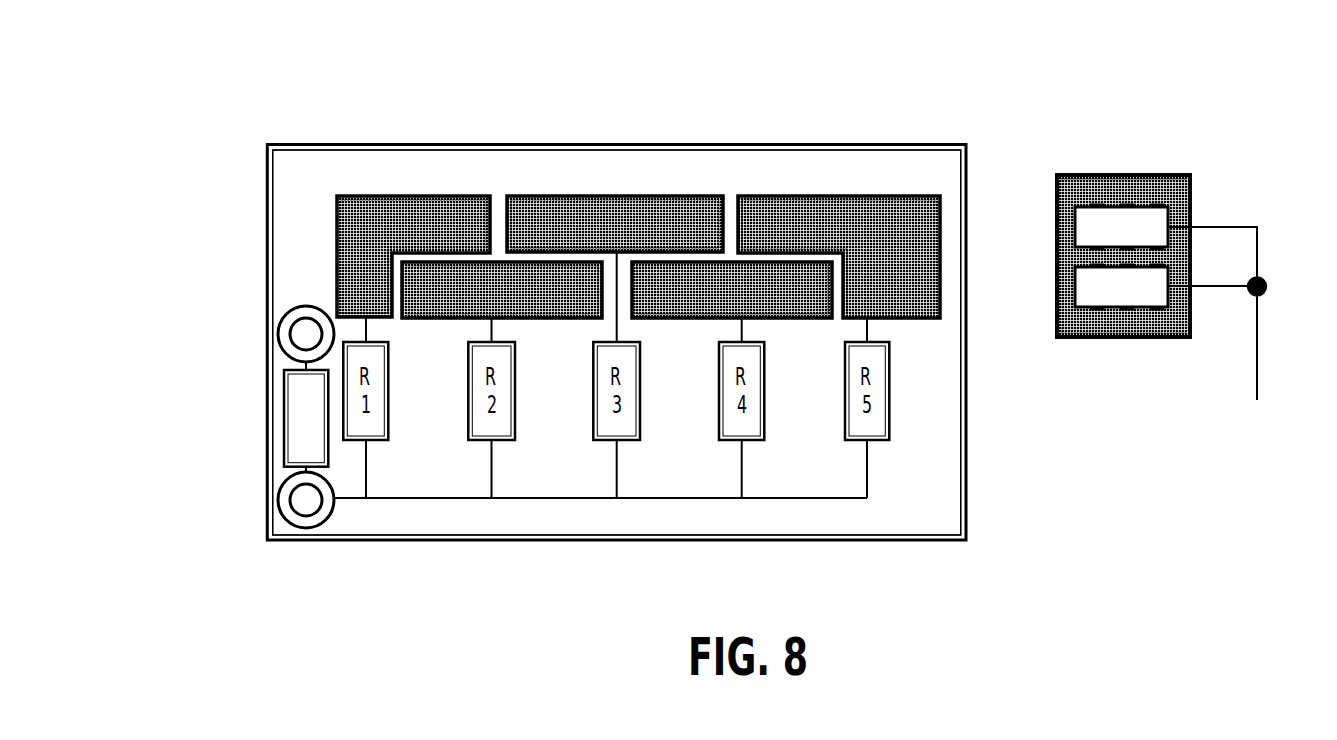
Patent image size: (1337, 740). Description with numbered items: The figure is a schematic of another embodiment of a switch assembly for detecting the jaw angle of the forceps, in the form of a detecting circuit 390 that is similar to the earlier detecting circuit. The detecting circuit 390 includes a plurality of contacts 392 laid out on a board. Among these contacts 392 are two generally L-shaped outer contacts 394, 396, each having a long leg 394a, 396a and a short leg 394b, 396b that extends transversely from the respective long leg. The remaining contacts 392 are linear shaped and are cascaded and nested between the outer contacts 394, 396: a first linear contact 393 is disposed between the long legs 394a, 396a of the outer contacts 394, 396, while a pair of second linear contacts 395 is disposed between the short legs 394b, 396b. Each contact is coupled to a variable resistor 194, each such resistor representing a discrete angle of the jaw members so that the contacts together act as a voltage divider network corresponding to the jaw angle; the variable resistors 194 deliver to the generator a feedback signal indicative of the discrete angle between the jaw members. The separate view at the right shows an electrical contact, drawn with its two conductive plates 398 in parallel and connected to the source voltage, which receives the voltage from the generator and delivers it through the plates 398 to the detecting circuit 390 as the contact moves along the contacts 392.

The detecting circuit 390 is at (595, 72).
The contacts 392 is at (316, 225).
The first linear contact 393 is at (608, 219).
The outer contact 394 is at (363, 210).
The long leg 394a is at (467, 210).
The short leg 394b is at (360, 298).
The second linear contacts 395 is at (803, 303).
The outer contact 396 is at (878, 208).
The long leg 396a is at (773, 208).
The short leg 396b is at (902, 295).
The source voltage connection 398 is at (1143, 227).
The variable resistor 194 is at (293, 410).